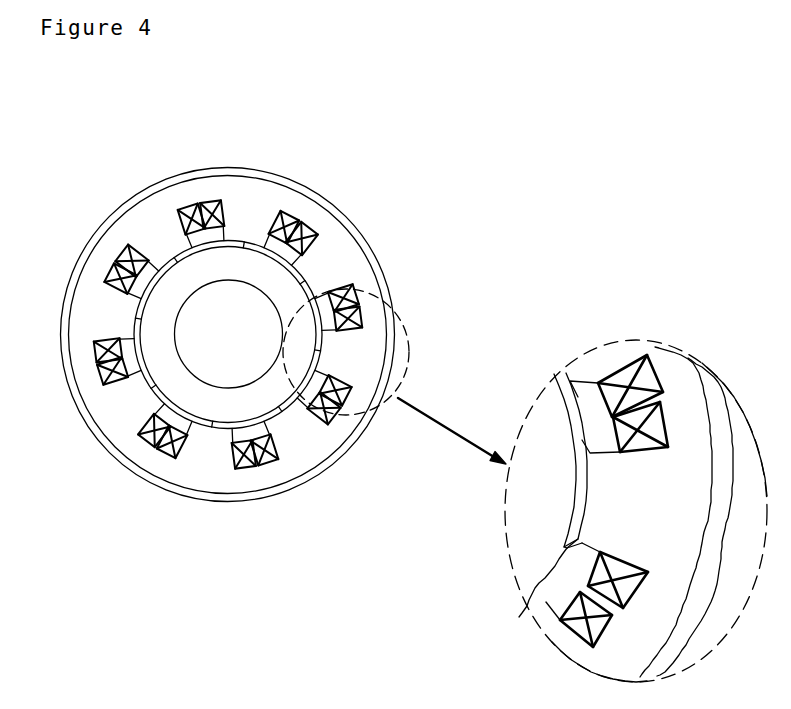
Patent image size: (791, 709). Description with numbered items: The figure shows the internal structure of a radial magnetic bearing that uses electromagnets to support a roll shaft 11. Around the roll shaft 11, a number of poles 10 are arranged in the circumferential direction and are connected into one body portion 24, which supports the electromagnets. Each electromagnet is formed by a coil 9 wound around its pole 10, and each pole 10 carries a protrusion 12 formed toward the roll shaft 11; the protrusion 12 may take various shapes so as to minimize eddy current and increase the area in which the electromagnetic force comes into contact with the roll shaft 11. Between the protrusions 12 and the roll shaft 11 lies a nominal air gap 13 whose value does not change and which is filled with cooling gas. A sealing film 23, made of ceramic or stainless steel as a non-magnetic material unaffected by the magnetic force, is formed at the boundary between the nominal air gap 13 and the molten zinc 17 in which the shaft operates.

The coil 9 is at (185, 206).
The pole 10 is at (242, 207).
The roll shaft 11 is at (176, 330).
The protrusion 12 is at (295, 397).
The nominal air gap 13 is at (128, 293).
The molten zinc 17 is at (298, 295).
The sealing film 23 is at (309, 290).
The body portion 24 is at (300, 212).